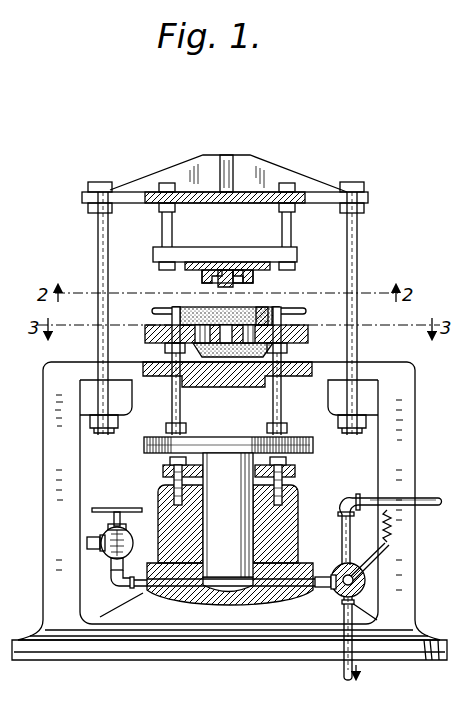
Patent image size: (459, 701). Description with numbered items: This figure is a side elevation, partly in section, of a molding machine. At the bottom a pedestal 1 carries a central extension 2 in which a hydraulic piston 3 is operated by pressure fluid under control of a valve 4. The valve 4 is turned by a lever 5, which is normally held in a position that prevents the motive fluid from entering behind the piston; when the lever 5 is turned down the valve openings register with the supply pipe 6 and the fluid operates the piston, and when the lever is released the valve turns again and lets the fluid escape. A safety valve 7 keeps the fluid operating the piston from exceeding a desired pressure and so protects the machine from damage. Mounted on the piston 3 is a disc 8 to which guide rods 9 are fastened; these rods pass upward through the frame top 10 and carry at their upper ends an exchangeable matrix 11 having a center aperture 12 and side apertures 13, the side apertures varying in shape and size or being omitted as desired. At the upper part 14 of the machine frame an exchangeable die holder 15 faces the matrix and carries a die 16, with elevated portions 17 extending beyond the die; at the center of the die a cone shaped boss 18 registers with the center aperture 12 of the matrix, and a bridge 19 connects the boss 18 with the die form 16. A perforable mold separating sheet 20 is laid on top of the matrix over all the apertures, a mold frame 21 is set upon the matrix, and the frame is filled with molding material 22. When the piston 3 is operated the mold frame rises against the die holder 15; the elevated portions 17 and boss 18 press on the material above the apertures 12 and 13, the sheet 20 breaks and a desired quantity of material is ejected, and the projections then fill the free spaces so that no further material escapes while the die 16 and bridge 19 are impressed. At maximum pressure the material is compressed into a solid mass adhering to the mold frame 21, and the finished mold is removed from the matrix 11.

The pedestal 1 is at (399, 647).
The central extension 2 is at (297, 512).
The hydraulic piston 3 is at (228, 515).
The valve 4 is at (364, 588).
The lever 5 is at (380, 557).
The supply pipe 6 is at (427, 498).
The safety valve 7 is at (107, 556).
The disc 8 is at (314, 446).
The guide rods 9 is at (181, 401).
The frame top 10 is at (319, 366).
The exchangeable matrix 11 is at (308, 334).
The center aperture 12 is at (260, 309).
The side apertures 13 is at (176, 333).
The upper part of the machine frame 14 is at (321, 194).
The exchangeable die holder 15 is at (300, 253).
The die 16 is at (178, 269).
The elevated portions 17 is at (204, 279).
The cone shaped boss 18 is at (229, 270).
The bridge 19 is at (252, 275).
The perforable mold separating sheet 20 is at (283, 333).
The mold frame 21 is at (162, 311).
The molding material 22 is at (238, 309).